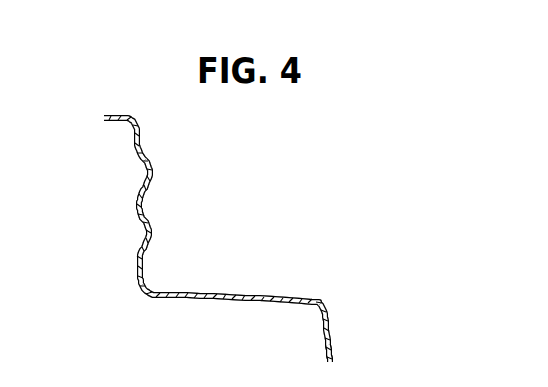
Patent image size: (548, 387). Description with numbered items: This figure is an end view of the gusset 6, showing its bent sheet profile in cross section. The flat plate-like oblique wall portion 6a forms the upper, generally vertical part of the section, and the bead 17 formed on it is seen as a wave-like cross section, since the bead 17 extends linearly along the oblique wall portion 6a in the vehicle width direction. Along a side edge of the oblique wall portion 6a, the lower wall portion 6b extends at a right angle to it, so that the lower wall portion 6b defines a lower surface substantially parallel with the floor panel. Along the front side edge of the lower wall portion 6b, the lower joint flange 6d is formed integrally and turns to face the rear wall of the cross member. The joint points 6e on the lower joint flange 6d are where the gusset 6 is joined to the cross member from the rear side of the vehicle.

The gusset 6 is at (233, 246).
The oblique wall portion 6a is at (142, 148).
The lower wall portion 6b is at (225, 292).
The lower joint flange 6d is at (328, 355).
The joint points 6e is at (333, 348).
The bead 17 is at (134, 203).